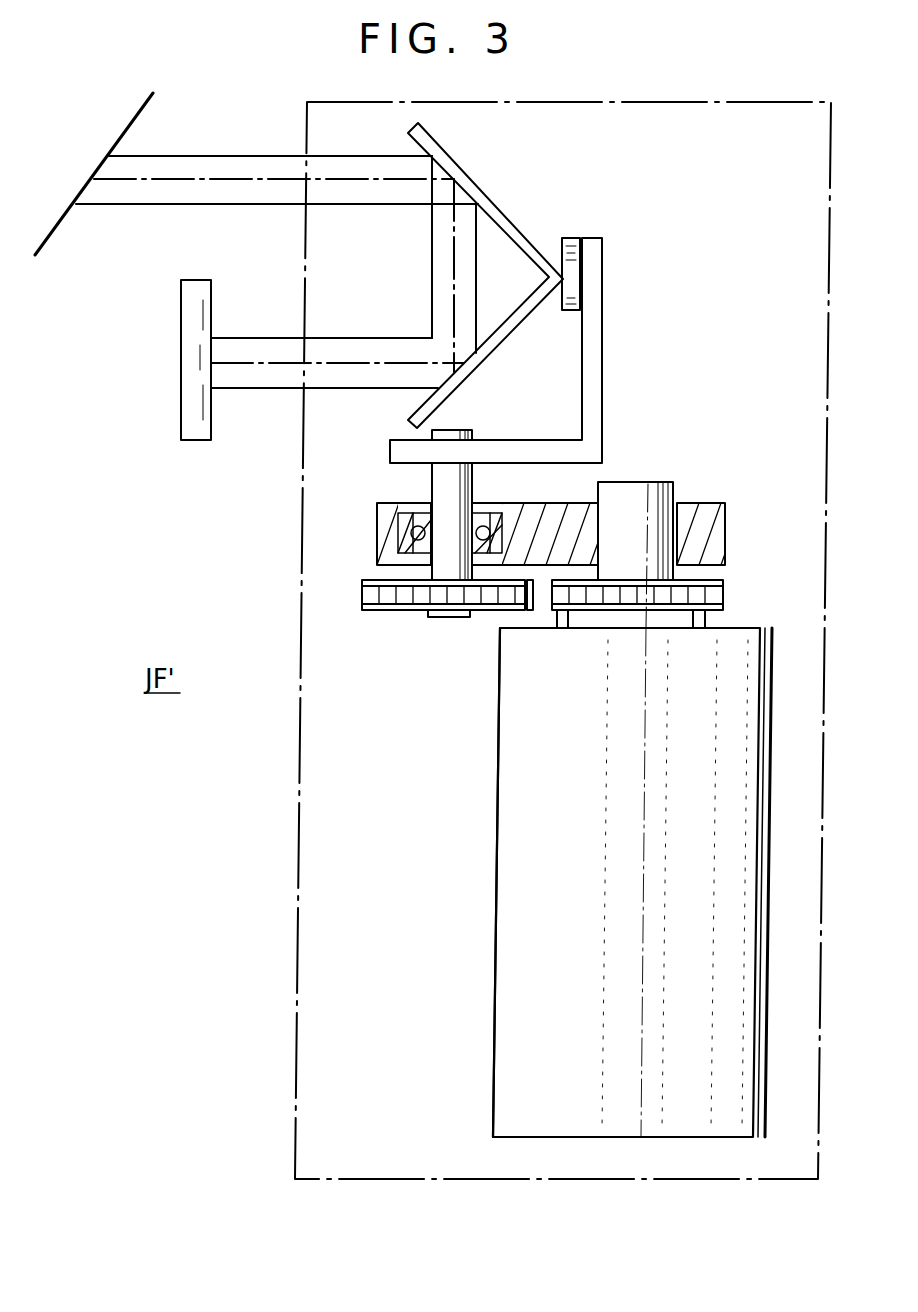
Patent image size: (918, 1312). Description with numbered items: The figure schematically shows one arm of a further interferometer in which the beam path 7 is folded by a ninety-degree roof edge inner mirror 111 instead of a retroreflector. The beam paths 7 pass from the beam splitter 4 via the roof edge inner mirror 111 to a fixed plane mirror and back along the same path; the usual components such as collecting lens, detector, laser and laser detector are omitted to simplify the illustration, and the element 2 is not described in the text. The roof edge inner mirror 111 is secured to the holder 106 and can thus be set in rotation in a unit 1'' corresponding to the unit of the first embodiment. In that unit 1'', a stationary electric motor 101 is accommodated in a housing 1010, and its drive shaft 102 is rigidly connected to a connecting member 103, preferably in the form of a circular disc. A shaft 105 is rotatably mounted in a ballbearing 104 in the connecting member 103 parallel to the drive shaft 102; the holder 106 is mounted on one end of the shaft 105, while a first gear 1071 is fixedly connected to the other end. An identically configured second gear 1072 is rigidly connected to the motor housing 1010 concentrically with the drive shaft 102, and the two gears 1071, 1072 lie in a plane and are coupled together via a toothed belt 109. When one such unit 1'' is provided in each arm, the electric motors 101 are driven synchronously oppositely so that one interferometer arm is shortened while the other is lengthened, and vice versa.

The unit 1'' is at (563, 604).
The beam splitter 4 is at (110, 150).
The beam path 7 is at (269, 197).
The light source / beam element 2 is at (200, 441).
The roof edge inner mirror 111 is at (514, 224).
The holder 106 is at (603, 320).
The shaft 105 is at (474, 485).
The drive shaft 102 is at (650, 481).
The connecting member 103 is at (727, 528).
The ballbearing 104 is at (407, 542).
The first gear 1071 is at (387, 597).
The second gear 1072 is at (725, 602).
The toothed belt 109 is at (540, 603).
The electric motor 101 is at (510, 840).
The housing 1010 is at (497, 767).